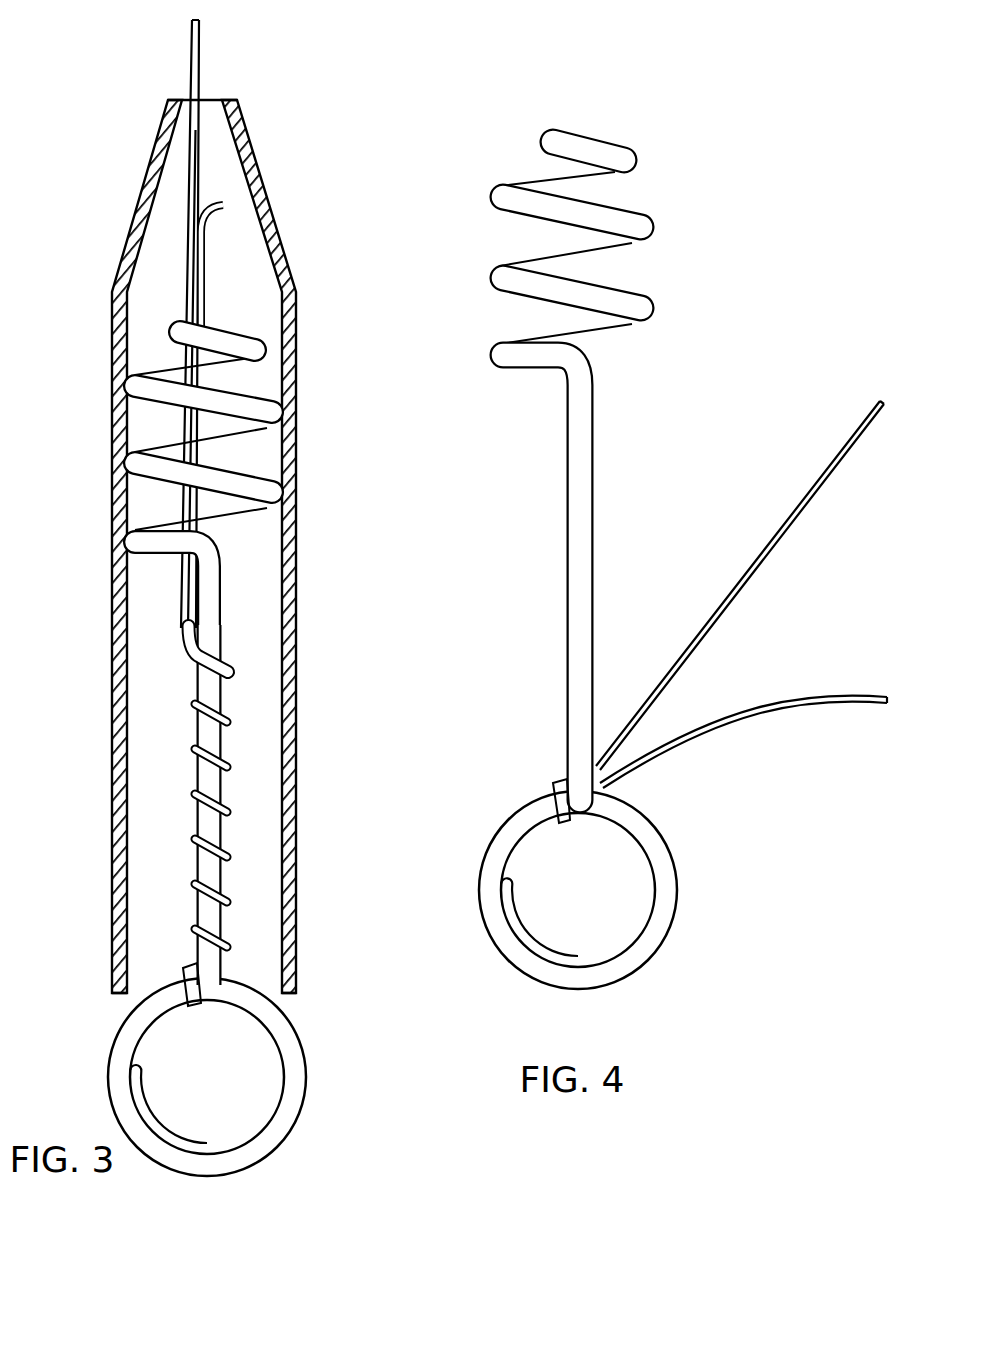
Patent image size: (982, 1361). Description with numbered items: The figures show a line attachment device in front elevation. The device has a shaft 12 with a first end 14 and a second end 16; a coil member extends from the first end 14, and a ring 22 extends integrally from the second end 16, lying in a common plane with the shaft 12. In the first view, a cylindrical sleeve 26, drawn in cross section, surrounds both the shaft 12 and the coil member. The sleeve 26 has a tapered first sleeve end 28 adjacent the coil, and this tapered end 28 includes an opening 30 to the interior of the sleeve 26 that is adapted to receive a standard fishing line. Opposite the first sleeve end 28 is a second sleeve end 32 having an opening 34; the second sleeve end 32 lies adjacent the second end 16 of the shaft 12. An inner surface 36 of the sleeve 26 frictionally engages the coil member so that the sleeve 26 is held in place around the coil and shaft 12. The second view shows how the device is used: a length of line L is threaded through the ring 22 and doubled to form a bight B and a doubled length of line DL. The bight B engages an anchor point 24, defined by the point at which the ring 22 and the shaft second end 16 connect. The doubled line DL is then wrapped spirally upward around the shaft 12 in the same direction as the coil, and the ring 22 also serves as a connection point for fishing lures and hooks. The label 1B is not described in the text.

In FIG. 3, the opening 30 is at (215, 100).
In FIG. 3, the tapered first sleeve end 28 is at (237, 590).
In FIG. 3, the upper end of coil 1B is at (228, 325).
In FIG. 3, the cylindrical sleeve 26 is at (330, 480).
In FIG. 3, the first end 14 is at (227, 625).
In FIG. 3, the inner surface 36 is at (130, 748).
In FIG. 3, the shaft 12 is at (227, 752).
In FIG. 3, the second end 16 is at (228, 881).
In FIG. 4, the second end 16 is at (567, 648).
In FIG. 3, the second sleeve end 32 is at (296, 907).
In FIG. 3, the opening 34 is at (293, 997).
In FIG. 4, the line L is at (753, 567).
In FIG. 4, the doubled length of line DL is at (727, 710).
In FIG. 4, the bight B is at (552, 777).
In FIG. 4, the anchor point 24 is at (580, 812).
In FIG. 4, the ring 22 is at (678, 889).